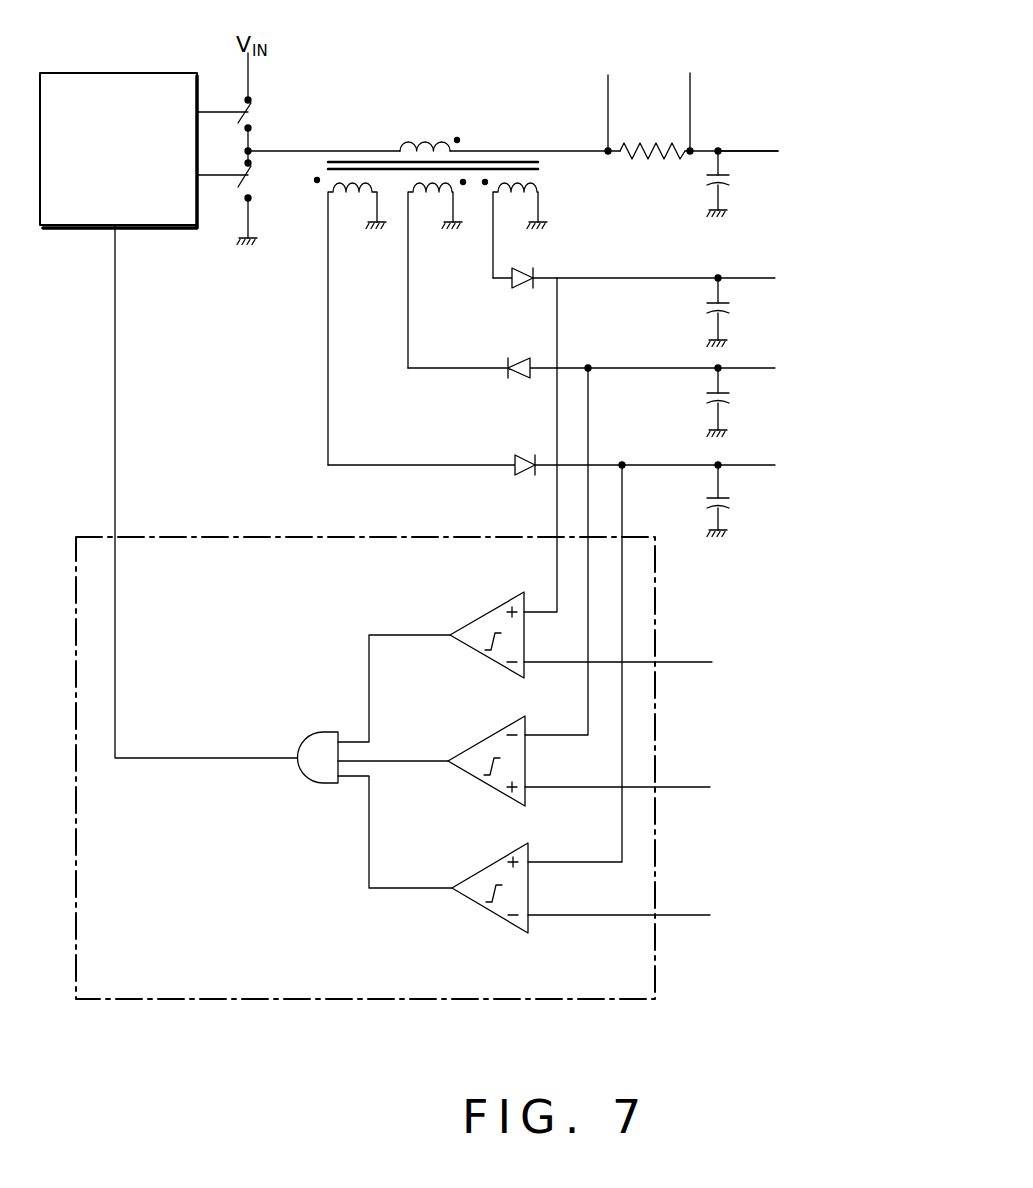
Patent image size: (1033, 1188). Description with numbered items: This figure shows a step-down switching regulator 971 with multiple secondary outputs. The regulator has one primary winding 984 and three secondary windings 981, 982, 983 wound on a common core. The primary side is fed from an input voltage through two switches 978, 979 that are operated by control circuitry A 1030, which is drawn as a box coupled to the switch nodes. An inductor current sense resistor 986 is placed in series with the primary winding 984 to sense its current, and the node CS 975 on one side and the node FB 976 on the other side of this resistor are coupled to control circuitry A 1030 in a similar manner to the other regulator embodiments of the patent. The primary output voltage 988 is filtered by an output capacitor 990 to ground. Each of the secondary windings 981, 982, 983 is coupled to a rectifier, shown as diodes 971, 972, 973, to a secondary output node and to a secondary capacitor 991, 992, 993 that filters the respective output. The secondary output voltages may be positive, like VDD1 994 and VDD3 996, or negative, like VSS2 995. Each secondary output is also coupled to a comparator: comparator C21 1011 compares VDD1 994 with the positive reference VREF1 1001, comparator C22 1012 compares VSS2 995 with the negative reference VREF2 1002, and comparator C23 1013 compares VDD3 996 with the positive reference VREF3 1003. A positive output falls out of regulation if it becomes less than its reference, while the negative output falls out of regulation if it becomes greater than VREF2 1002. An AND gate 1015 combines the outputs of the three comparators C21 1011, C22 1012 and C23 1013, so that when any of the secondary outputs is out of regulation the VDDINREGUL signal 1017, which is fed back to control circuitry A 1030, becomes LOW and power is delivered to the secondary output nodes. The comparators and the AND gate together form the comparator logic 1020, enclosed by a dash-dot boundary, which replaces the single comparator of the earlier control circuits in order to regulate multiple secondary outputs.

The control circuitry A 1030 is at (118, 150).
The switch SA 978 is at (266, 104).
The switch SB 979 is at (266, 174).
The primary winding 984 is at (424, 141).
The secondary winding 981 is at (352, 200).
The secondary winding 982 is at (432, 200).
The secondary winding 983 is at (512, 200).
The node CS 975 is at (607, 83).
The node FB 976 is at (693, 82).
The current sense resistor RCS 986 is at (655, 131).
The output voltage VOUT 988 is at (809, 149).
The output capacitor COUT 990 is at (779, 182).
The step-down switching regulator 971 is at (518, 284).
The diode 972 is at (502, 376).
The diode 973 is at (503, 474).
The VDD1 994 is at (706, 293).
The capacitor C1 991 is at (753, 312).
The VSS2 995 is at (721, 384).
The capacitor C2 992 is at (761, 407).
The VDD3 996 is at (743, 483).
The capacitor C3 993 is at (761, 508).
The comparator C21 1011 is at (529, 609).
The comparator C22 1012 is at (538, 732).
The comparator C23 1013 is at (538, 856).
The AND gate 1015 is at (318, 786).
The VDDINREGUL signal 1017 is at (184, 766).
The VREF1 1001 is at (659, 684).
The VREF2 1002 is at (665, 807).
The VREF3 1003 is at (666, 938).
The comparator logic 1020 is at (657, 988).